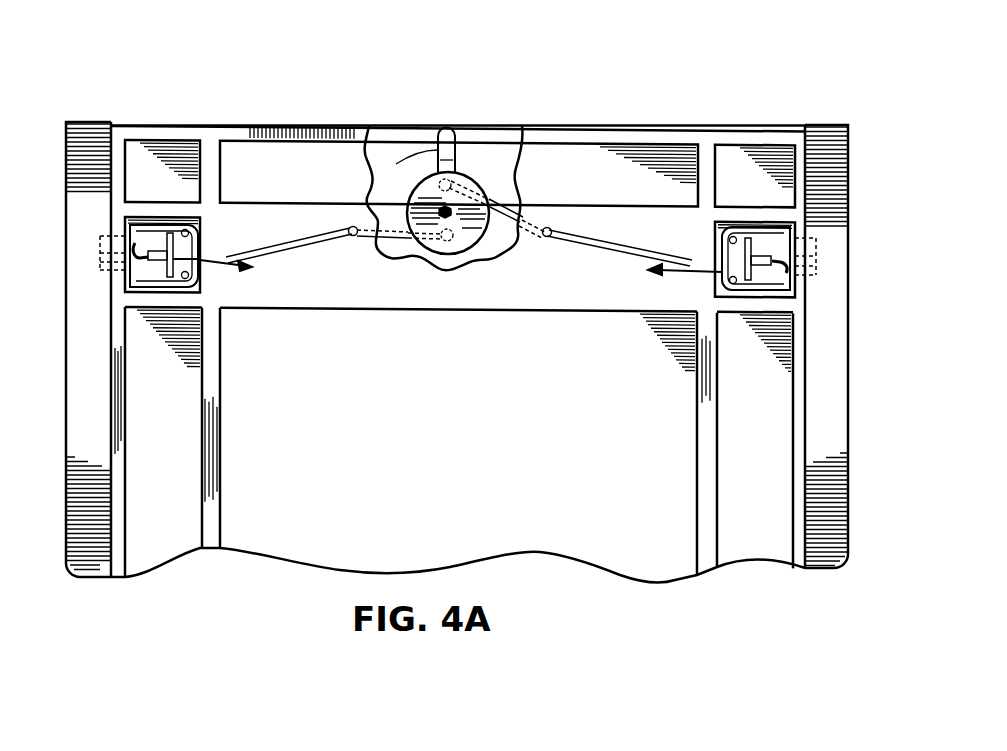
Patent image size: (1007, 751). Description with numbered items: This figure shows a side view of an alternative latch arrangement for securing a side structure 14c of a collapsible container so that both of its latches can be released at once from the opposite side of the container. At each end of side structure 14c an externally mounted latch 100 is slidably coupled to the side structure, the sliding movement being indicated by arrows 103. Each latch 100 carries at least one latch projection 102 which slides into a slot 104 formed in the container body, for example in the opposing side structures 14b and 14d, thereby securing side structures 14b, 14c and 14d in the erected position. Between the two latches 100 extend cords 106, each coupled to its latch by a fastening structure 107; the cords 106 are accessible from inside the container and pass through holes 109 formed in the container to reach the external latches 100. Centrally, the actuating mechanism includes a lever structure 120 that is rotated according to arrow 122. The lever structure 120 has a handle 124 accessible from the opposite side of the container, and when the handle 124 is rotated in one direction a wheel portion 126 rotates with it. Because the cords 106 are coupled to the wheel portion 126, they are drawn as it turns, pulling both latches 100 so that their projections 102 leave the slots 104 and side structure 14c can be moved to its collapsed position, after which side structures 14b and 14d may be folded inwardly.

The side structure 14b is at (862, 407).
The side structure 14c is at (652, 125).
The side structure 14d is at (52, 150).
The latch 100 is at (146, 272).
The latch projection 102 is at (107, 237).
The arrows 103 is at (230, 258).
The slot 104 is at (98, 240).
The cord 106 is at (285, 263).
The fastening structure 107 is at (136, 243).
The holes 109 is at (353, 237).
The lever structure 120 is at (456, 117).
The arrow 122 is at (393, 167).
The handle 124 is at (452, 162).
The wheel portion 126 is at (462, 245).